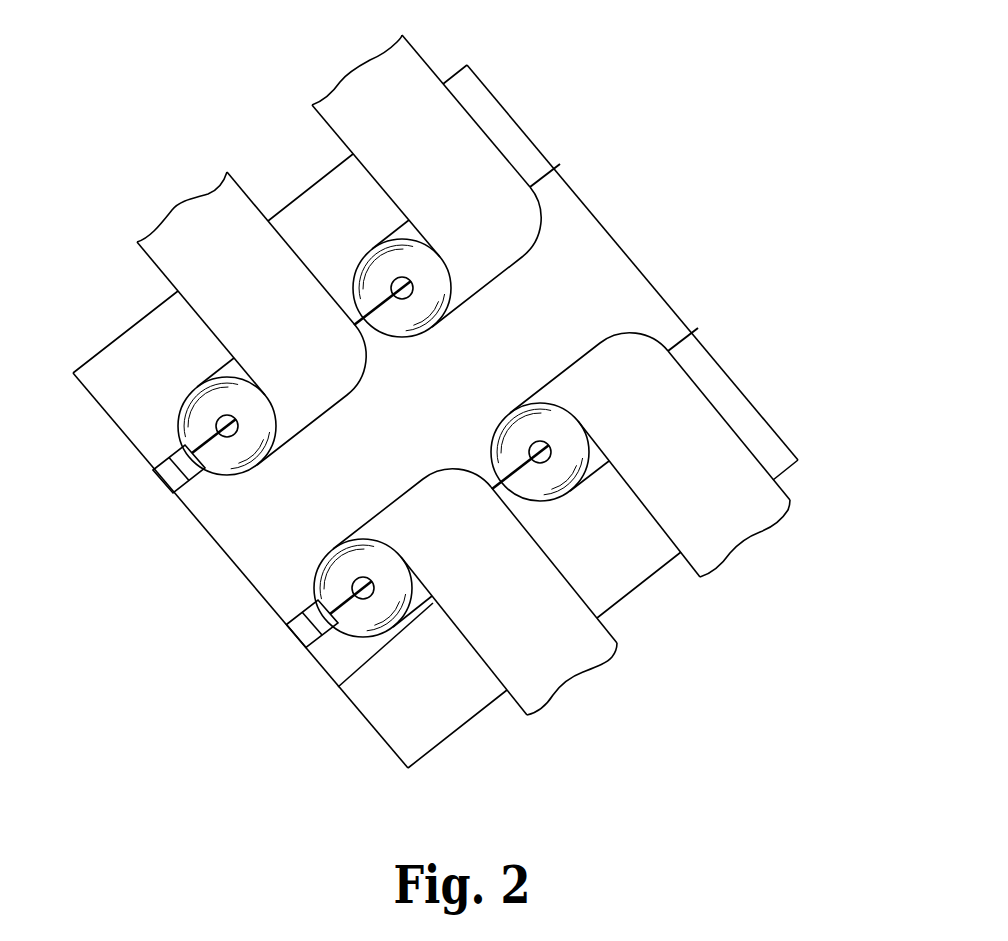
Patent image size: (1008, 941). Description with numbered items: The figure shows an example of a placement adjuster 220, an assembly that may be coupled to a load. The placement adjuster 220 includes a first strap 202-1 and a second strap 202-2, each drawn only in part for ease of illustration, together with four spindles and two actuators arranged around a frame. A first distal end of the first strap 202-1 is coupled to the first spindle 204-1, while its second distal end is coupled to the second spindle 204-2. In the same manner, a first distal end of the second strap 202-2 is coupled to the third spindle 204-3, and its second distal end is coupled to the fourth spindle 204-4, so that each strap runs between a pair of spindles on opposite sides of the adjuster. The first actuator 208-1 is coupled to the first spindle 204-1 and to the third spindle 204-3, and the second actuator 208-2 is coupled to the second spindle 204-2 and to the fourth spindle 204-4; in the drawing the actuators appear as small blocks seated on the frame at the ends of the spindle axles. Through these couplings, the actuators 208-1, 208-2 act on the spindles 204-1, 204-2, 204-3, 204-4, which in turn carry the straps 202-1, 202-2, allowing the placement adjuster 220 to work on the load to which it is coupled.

The first strap 202-1 is at (152, 262).
The second strap 202-2 is at (427, 63).
The first spindle 204-1 is at (178, 416).
The second spindle 204-2 is at (362, 638).
The third spindle 204-3 is at (420, 338).
The fourth spindle 204-4 is at (495, 413).
The first actuator 208-1 is at (158, 483).
The second actuator 208-2 is at (296, 649).
The placement adjuster 220 is at (640, 168).